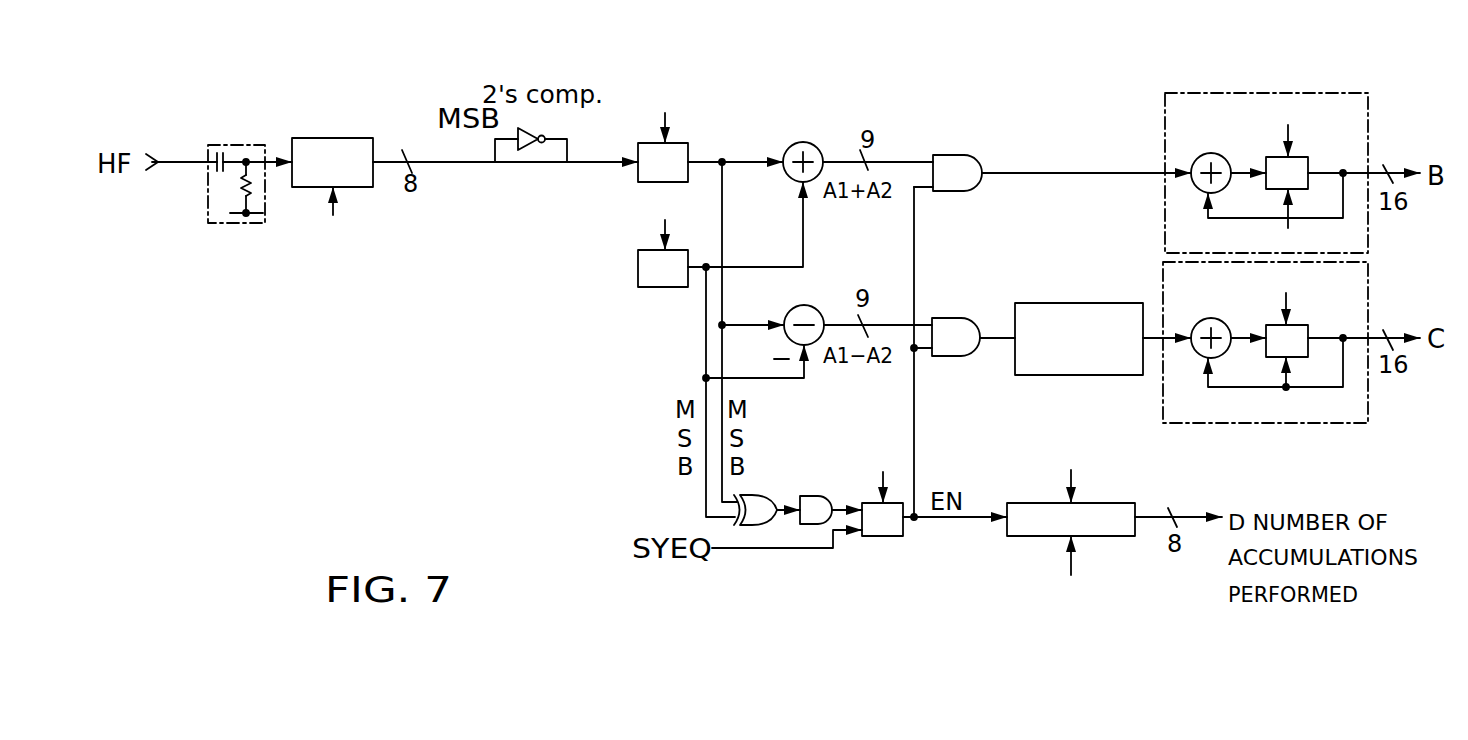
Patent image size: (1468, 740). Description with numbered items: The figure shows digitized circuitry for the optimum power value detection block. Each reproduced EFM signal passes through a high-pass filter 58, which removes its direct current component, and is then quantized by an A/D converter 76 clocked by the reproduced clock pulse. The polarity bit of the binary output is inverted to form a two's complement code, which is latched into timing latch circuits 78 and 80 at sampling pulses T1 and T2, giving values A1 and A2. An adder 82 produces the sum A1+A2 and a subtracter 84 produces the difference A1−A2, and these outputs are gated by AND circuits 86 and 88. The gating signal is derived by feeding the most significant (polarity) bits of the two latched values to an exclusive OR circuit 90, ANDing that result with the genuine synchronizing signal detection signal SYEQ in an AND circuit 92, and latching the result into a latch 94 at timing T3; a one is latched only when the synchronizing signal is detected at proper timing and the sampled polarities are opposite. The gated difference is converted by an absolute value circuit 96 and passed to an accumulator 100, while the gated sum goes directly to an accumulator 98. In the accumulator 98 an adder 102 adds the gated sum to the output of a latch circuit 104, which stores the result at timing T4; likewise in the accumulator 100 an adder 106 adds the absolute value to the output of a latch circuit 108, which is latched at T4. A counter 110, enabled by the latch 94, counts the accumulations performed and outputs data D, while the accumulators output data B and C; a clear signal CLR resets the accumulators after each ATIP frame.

The high-pass filter 58 is at (238, 143).
The A/D converter 76 is at (357, 188).
The timing latch circuit 78 is at (688, 143).
The timing latch circuit 80 is at (657, 287).
The adder 82 is at (803, 142).
The subtracter 84 is at (810, 305).
The AND circuit 86 is at (957, 155).
The AND circuit 88 is at (960, 318).
The exclusive OR circuit 90 is at (760, 493).
The AND circuit 92 is at (820, 496).
The latch circuit 94 is at (882, 536).
The absolute value circuit 96 is at (1088, 303).
The accumulator 98 is at (1297, 93).
The accumulator 100 is at (1368, 400).
The adder 102 is at (1208, 153).
The latch circuit 104 is at (1308, 157).
The adder 106 is at (1197, 352).
The latch circuit 108 is at (1308, 325).
The counter 110 is at (1135, 505).